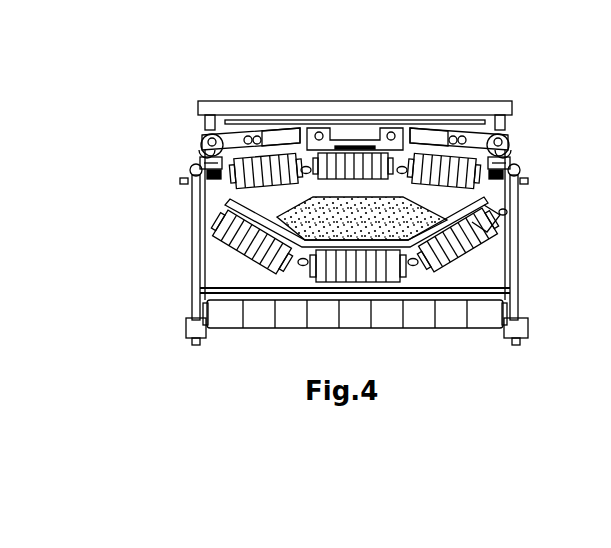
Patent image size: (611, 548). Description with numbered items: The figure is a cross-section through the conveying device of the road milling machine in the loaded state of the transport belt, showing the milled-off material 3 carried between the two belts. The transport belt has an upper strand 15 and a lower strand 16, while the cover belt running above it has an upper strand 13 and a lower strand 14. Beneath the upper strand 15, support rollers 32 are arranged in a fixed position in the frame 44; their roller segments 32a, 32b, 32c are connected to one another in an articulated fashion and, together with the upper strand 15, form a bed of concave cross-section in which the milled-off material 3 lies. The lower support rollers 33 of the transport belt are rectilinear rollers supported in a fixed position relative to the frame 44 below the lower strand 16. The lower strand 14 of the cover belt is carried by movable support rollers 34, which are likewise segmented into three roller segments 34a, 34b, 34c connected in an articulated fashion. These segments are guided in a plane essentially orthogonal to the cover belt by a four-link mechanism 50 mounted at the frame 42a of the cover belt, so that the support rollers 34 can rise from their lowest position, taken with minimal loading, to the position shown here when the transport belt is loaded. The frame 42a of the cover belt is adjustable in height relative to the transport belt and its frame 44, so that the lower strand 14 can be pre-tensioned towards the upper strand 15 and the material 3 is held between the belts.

The milled-off material 3 is at (225, 204).
The upper strand 13 is at (300, 165).
The lower strand 14 is at (303, 160).
The upper strand 15 is at (470, 250).
The lower strand 16 is at (428, 292).
The support rollers 32 is at (328, 298).
The roller segment 32a is at (218, 268).
The roller segment 32b is at (337, 267).
The roller segment 32c is at (450, 267).
The lower support rollers 33 is at (403, 318).
The support rollers 34 is at (286, 114).
The roller segment 34a is at (250, 137).
The roller segment 34b is at (358, 163).
The roller segment 34c is at (453, 137).
The frame 42a is at (519, 160).
The frame 44 is at (517, 243).
The four-link mechanism 50 is at (280, 138).